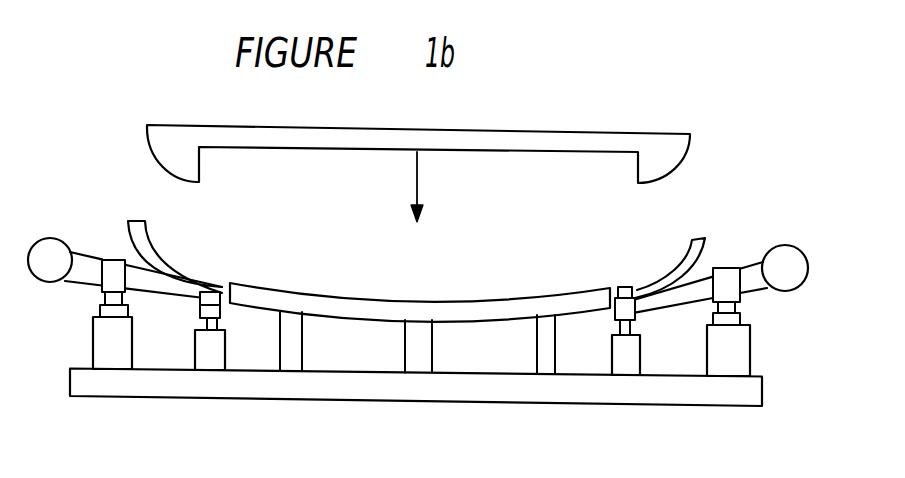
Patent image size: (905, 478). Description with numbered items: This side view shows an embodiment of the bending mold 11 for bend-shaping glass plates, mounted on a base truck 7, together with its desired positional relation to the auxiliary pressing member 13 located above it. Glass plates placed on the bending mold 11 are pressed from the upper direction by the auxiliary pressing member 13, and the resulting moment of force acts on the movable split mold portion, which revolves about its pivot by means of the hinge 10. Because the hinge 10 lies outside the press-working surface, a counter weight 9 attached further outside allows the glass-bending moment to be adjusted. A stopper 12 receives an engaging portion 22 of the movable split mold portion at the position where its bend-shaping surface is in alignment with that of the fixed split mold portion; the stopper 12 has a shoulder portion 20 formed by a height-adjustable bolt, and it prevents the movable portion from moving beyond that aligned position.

The auxiliary pressing member 13 is at (678, 164).
The engaging portion 22 is at (627, 300).
The counter weight 9 is at (788, 275).
The hinge 10 is at (743, 298).
The shoulder portion 20 is at (635, 312).
The stopper 12 is at (638, 352).
The base truck 7 is at (510, 386).
The bending mold 11 is at (262, 299).